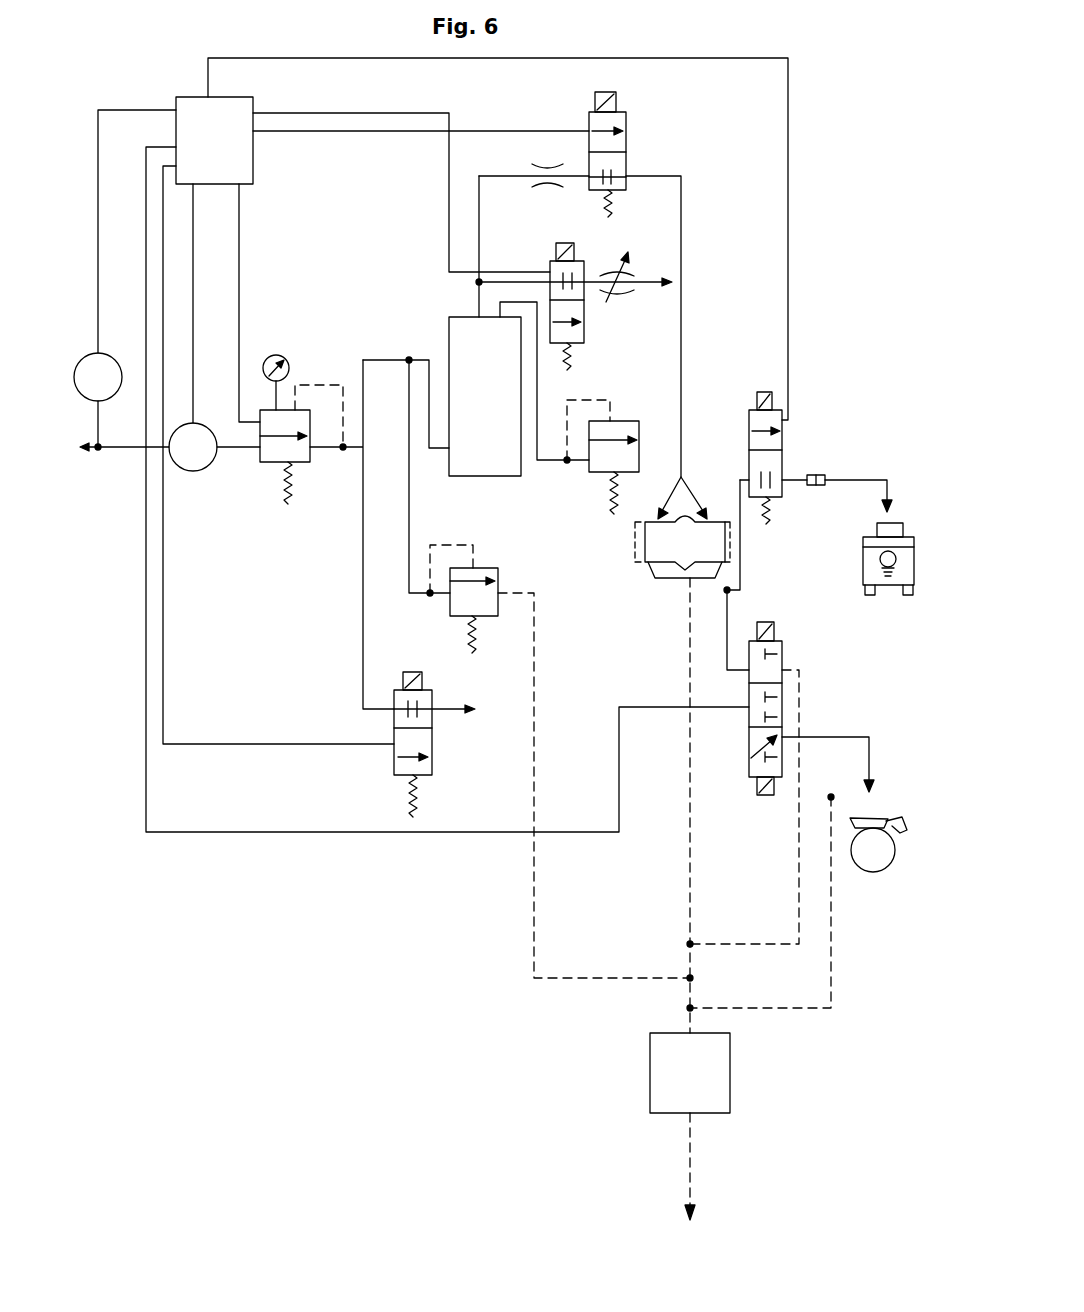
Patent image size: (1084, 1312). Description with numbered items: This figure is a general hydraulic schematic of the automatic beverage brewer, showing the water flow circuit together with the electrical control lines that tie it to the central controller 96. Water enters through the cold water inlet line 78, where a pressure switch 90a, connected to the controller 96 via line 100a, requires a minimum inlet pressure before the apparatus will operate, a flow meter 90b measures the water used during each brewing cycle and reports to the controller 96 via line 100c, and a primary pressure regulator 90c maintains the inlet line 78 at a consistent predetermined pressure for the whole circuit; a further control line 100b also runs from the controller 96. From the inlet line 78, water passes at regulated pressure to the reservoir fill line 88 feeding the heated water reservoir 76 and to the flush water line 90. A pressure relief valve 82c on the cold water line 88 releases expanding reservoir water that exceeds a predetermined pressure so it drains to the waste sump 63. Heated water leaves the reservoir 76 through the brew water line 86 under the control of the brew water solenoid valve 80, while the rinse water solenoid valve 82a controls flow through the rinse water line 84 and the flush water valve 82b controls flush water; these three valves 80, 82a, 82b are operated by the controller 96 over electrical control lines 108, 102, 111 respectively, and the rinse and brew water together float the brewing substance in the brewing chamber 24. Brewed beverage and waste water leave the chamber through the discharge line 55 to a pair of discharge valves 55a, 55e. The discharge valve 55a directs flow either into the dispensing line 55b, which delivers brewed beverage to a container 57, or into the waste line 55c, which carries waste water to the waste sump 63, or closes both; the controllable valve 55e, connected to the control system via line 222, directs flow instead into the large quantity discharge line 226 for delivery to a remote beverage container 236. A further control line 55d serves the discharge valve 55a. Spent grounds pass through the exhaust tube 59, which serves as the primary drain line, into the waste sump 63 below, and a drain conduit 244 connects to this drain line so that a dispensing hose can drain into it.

The brewing chamber 24 is at (723, 512).
The discharge line 55 is at (718, 576).
The discharge valve 55a is at (783, 643).
The dispensing line 55b is at (848, 737).
The waste line 55c is at (799, 885).
The control line 55d is at (147, 772).
The controllable valve 55e is at (742, 426).
The container 57 is at (876, 858).
The exhaust tube 59 is at (690, 888).
The waste sump 63 is at (650, 1068).
The heated water reservoir 76 is at (507, 477).
The cold water inlet line 78 is at (243, 449).
The brew water solenoid valve 80 is at (590, 116).
The rinse water solenoid valve 82a is at (550, 264).
The flush water valve 82b is at (394, 766).
The pressure relief valve 82c is at (498, 580).
The rinse water line 84 is at (479, 282).
The brew water line 86 is at (513, 178).
The reservoir fill line 88 is at (421, 357).
The flush water line 90 is at (363, 559).
The pressure switch 90a is at (95, 404).
The flow meter 90b is at (191, 472).
The primary pressure regulator 90c is at (268, 464).
The central controller 96 is at (236, 112).
The line 100a is at (98, 125).
The control line 100b is at (239, 298).
The line 100c is at (193, 248).
The electrical control line 102 is at (449, 210).
The electrical control line 108 is at (520, 131).
The electrical control line 111 is at (296, 744).
The line 222 is at (788, 210).
The large quantity discharge line 226 is at (793, 468).
The remote beverage container 236 is at (880, 598).
The drain conduit 244 is at (812, 1010).